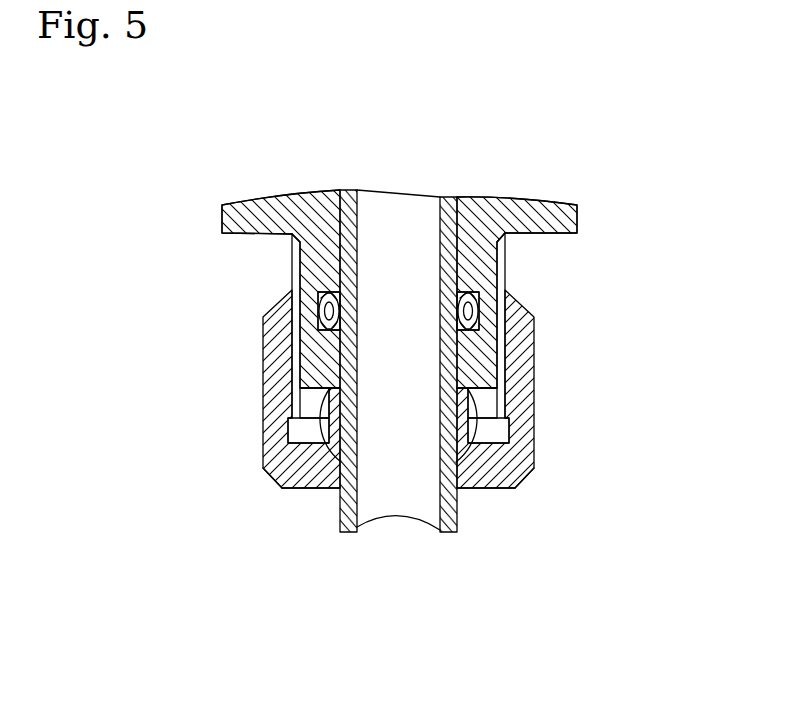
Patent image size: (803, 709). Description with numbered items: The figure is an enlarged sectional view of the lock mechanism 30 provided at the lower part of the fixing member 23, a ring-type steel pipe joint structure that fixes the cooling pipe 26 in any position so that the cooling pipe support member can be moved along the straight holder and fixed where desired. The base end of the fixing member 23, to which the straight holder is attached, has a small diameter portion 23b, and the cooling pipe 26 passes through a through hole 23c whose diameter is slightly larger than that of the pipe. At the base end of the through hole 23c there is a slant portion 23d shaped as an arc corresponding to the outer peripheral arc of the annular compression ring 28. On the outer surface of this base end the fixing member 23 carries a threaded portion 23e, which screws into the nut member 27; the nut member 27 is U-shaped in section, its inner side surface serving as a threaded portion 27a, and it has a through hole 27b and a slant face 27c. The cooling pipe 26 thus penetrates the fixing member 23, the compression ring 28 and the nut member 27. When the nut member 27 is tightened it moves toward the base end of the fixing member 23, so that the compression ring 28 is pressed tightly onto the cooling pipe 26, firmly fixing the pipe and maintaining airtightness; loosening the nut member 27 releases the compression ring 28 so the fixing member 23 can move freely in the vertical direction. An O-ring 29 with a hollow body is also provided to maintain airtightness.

The fixing member 23 is at (562, 207).
The small diameter portion 23b is at (291, 253).
The through hole 23c is at (498, 248).
The slant portion 23d is at (312, 388).
The threaded portion 23e is at (501, 312).
The cooling pipe 26 is at (450, 200).
The nut member 27 is at (534, 430).
The threaded portion 27a is at (500, 402).
The through hole 27b is at (458, 478).
The slant face 27c is at (467, 447).
The compression ring 28 is at (330, 427).
The O-ring 29 is at (319, 302).
The lock mechanism 30 is at (259, 501).